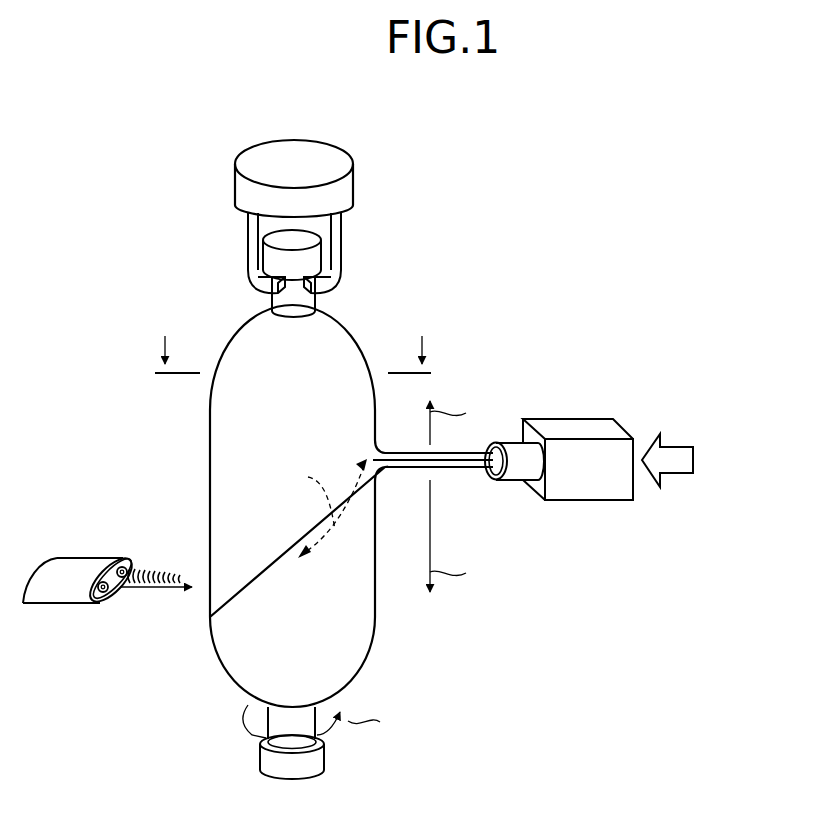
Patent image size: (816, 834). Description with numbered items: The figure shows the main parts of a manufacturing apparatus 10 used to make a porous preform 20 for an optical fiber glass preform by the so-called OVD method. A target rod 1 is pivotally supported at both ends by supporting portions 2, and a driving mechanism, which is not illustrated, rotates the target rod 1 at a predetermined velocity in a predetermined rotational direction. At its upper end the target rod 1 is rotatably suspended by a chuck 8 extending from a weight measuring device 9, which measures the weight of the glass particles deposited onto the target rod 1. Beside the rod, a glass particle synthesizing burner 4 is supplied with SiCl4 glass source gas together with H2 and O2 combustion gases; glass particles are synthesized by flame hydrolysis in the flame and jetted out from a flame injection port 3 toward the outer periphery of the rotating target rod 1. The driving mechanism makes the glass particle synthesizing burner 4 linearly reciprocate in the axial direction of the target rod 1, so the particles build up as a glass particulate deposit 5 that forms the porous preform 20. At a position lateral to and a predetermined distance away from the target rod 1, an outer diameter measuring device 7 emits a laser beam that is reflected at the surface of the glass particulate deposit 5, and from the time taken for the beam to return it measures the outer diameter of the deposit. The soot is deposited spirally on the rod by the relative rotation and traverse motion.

The target rod 1 is at (268, 720).
The supporting portion 2 is at (268, 261).
The flame injection port 3 is at (503, 481).
The glass particle synthesizing burner 4 is at (575, 425).
The glass particulate deposit 5 is at (210, 483).
The outer diameter measuring device 7 is at (75, 566).
The chuck 8 is at (341, 285).
The weight measuring device 9 is at (294, 150).
The manufacturing apparatus 10 is at (492, 331).
The porous preform 20 is at (160, 436).